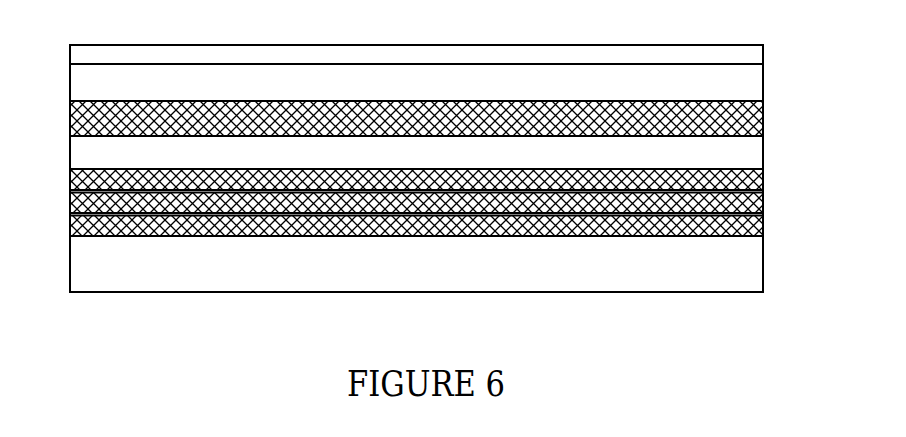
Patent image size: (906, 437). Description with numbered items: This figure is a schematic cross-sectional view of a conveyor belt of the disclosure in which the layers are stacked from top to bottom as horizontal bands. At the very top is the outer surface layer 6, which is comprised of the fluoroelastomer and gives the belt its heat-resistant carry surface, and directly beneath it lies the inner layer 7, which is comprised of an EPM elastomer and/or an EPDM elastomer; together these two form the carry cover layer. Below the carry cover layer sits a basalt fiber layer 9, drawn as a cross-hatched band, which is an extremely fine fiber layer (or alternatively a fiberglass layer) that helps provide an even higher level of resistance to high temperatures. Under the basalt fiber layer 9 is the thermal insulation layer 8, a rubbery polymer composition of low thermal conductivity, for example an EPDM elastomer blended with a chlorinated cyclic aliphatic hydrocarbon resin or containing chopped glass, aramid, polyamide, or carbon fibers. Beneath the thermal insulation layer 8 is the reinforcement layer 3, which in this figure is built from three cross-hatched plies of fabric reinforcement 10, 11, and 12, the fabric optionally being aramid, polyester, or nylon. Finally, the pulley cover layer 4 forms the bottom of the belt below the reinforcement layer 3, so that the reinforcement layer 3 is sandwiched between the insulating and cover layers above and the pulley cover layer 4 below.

The reinforcement layer 3 is at (763, 203).
The pulley cover layer 4 is at (70, 263).
The outer surface layer 6 is at (77, 55).
The inner layer 7 is at (77, 84).
The thermal insulation layer 8 is at (70, 152).
The basalt fiber layer 9 is at (83, 120).
The ply of fabric reinforcement 10 is at (77, 182).
The ply of fabric reinforcement 11 is at (77, 204).
The ply of fabric reinforcement 12 is at (77, 226).